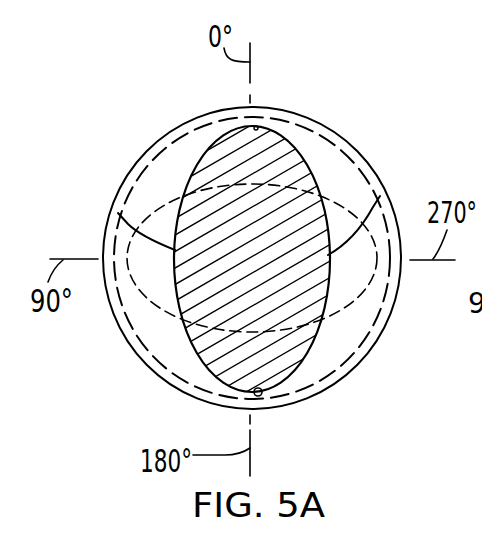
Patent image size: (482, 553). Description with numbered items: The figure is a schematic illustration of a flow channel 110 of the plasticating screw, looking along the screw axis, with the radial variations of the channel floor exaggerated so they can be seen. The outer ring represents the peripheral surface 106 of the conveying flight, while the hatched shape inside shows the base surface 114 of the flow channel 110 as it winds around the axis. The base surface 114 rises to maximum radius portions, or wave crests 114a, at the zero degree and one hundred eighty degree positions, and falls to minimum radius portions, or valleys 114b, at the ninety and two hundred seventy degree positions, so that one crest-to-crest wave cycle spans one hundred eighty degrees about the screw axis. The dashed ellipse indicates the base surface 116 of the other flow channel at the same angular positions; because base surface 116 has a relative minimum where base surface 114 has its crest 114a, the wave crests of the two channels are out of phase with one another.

The peripheral surface of the conveying flight 106 is at (170, 133).
The flow channel 110 is at (157, 343).
The base surface 114 is at (196, 345).
The wave crest 114a is at (258, 127).
The valley 114b is at (118, 213).
The base surface 116 is at (340, 317).